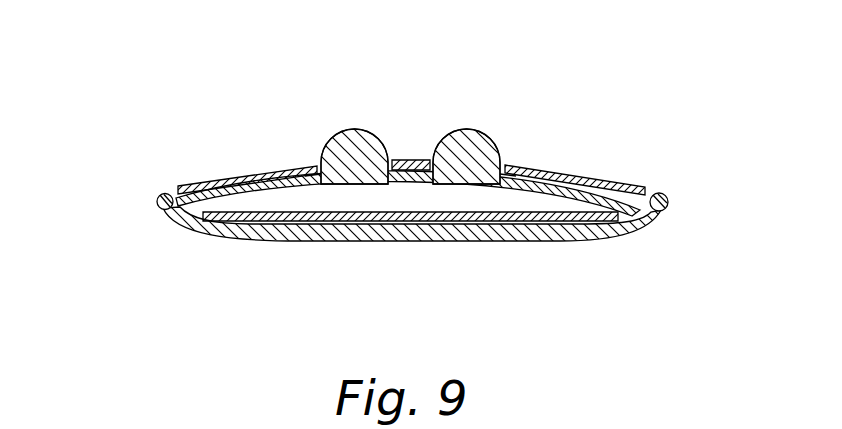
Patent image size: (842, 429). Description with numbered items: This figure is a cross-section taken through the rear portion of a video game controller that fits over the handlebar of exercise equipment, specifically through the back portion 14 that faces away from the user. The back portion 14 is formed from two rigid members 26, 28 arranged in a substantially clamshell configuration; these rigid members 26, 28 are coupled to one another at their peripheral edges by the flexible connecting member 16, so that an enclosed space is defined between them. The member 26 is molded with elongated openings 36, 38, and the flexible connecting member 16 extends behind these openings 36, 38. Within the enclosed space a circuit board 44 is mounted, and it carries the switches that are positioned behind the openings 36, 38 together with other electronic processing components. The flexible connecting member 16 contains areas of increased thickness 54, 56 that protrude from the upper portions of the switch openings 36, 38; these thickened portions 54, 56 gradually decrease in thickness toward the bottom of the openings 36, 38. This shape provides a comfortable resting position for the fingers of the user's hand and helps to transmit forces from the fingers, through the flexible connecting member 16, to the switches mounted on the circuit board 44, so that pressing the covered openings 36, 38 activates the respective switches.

The back portion 14 is at (128, 137).
The flexible connecting member 16 is at (157, 197).
The rigid member 26 is at (225, 178).
The rigid member 28 is at (418, 241).
The elongated opening 36 is at (317, 158).
The elongated opening 38 is at (510, 155).
The circuit board 44 is at (532, 221).
The area of increased thickness 54 is at (355, 128).
The area of increased thickness 56 is at (466, 130).